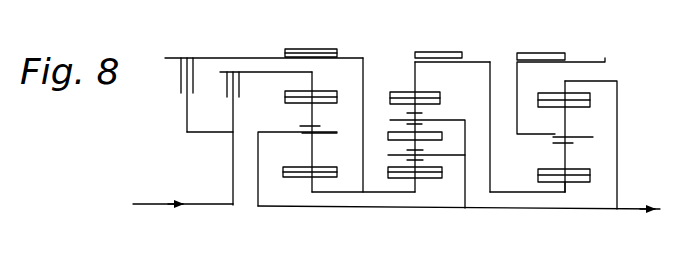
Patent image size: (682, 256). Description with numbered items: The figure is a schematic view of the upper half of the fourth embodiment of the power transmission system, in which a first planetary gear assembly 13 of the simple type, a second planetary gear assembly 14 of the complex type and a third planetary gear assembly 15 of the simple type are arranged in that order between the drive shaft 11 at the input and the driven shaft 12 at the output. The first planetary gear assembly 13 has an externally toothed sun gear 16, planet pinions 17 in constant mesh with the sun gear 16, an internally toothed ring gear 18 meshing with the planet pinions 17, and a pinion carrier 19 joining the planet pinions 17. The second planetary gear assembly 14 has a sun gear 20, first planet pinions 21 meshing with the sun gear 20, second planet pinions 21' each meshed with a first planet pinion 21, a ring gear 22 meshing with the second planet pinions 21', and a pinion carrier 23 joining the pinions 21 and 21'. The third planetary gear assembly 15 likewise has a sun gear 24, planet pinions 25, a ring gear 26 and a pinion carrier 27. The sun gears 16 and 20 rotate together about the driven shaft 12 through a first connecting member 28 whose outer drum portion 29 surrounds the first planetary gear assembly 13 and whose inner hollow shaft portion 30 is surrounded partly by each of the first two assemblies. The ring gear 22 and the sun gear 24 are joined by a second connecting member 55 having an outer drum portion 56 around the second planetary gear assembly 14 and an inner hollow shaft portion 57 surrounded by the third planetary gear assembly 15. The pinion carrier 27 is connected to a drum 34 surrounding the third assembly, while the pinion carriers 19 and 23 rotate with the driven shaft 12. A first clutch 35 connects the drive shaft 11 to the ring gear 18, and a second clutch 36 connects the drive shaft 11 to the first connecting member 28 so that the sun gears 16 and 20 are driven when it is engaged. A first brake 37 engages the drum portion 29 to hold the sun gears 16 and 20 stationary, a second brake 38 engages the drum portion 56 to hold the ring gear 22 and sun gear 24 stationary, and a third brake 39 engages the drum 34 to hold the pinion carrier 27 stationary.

The drive shaft 11 is at (160, 204).
The driven shaft 12 is at (628, 210).
The first planetary gear assembly 13 is at (303, 182).
The second planetary gear assembly 14 is at (423, 185).
The third planetary gear assembly 15 is at (577, 187).
The sun gear 16 is at (288, 178).
The planet pinions 17 is at (298, 102).
The ring gear 18 is at (285, 93).
The pinion carrier 19 is at (258, 150).
The sun gear 20 is at (435, 179).
The first planet pinions 21 is at (442, 192).
The second planet pinions 21' is at (449, 108).
The ring gear 22 is at (440, 94).
The pinion carrier 23 is at (468, 145).
The sun gear 24 is at (589, 183).
The planet pinions 25 is at (590, 107).
The ring gear 26 is at (617, 92).
The pinion carrier 27 is at (513, 120).
The first connecting member 28 is at (365, 88).
The outer drum portion 29 is at (262, 58).
The inner hollow shaft portion 30 is at (348, 207).
The drum 34 is at (600, 62).
The first clutch 35 is at (225, 85).
The second clutch 36 is at (181, 92).
The first brake 37 is at (331, 49).
The second brake 38 is at (442, 52).
The third brake 39 is at (553, 53).
The second connecting member 55 is at (493, 183).
The outer drum portion 56 is at (483, 62).
The inner hollow shaft portion 57 is at (514, 192).